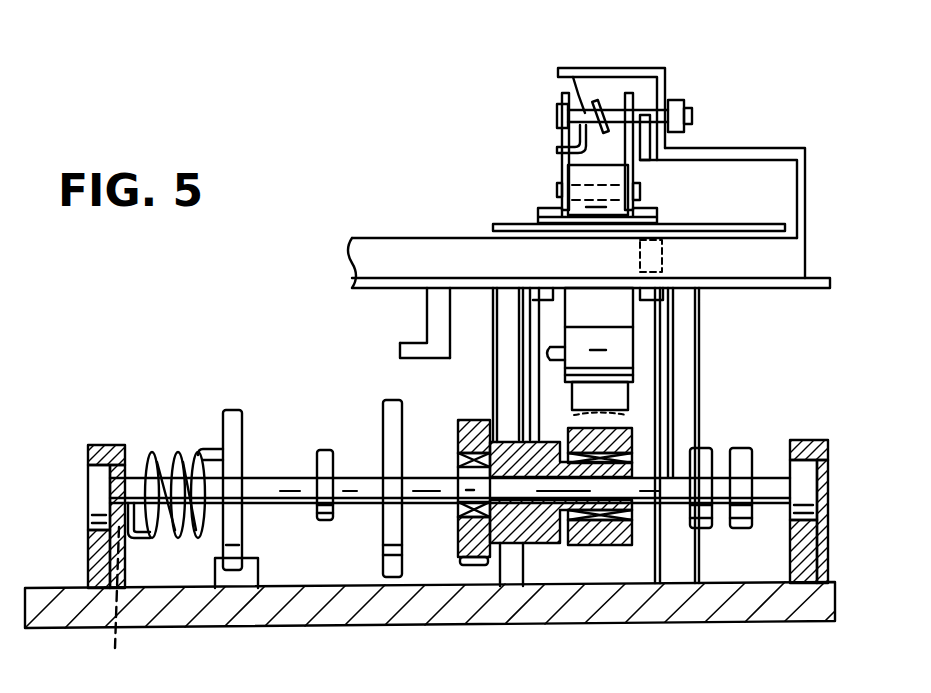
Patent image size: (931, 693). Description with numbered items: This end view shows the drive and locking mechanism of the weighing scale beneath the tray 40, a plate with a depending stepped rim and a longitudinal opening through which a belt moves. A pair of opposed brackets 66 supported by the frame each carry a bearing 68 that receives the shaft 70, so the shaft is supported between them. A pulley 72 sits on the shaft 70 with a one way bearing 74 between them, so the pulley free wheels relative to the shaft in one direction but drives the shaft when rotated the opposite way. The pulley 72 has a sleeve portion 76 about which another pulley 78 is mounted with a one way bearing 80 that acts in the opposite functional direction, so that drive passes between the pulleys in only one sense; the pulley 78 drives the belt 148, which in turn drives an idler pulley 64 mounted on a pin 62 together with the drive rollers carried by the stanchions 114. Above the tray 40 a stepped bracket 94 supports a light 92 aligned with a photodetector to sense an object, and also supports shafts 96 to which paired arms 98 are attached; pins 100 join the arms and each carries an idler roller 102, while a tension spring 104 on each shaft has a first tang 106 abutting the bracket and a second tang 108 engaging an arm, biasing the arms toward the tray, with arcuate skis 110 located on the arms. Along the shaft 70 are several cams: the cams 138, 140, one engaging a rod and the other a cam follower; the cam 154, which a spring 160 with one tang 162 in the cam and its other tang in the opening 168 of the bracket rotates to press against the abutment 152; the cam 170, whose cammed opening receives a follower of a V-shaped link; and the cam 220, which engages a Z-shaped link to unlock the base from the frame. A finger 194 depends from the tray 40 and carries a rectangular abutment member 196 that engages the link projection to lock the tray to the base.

The tray 40 is at (360, 228).
The pin 62 is at (550, 357).
The idler pulley 64 is at (627, 352).
The brackets 66 is at (100, 443).
The bearing 68 is at (90, 480).
The shaft 70 is at (372, 506).
The pulley 72 is at (462, 428).
The one way bearing 74 is at (458, 515).
The sleeve portion 76 is at (632, 473).
The pulley 78 is at (583, 543).
The one way bearing 80 is at (632, 515).
The light 92 is at (650, 145).
The stepped bracket 94 is at (770, 150).
The shafts 96 is at (570, 68).
The paired arms 98 is at (565, 170).
The pins 100 is at (558, 190).
The idler roller 102 is at (615, 178).
The tension spring 104 is at (596, 100).
The first tang 106 is at (627, 68).
The second tang 108 is at (557, 147).
The arcuate skis 110 is at (538, 211).
The stanchions 114 is at (495, 345).
The cam 138 is at (700, 528).
The cam 140 is at (745, 528).
The belt 148 is at (630, 399).
The abutment 152 is at (258, 575).
The cam 154 is at (232, 410).
The spring 160 is at (185, 450).
The tang 162 is at (212, 450).
The opening 168 is at (92, 597).
The cam 170 is at (388, 400).
The finger 194 is at (427, 307).
The rectangular abutment member 196 is at (400, 346).
The cam 220 is at (322, 450).